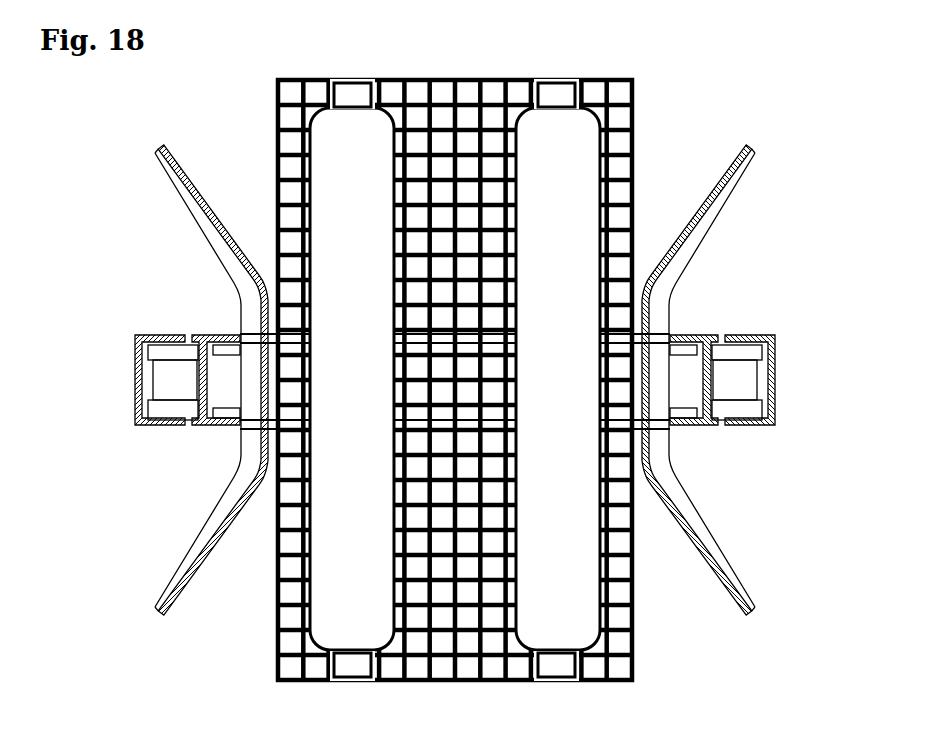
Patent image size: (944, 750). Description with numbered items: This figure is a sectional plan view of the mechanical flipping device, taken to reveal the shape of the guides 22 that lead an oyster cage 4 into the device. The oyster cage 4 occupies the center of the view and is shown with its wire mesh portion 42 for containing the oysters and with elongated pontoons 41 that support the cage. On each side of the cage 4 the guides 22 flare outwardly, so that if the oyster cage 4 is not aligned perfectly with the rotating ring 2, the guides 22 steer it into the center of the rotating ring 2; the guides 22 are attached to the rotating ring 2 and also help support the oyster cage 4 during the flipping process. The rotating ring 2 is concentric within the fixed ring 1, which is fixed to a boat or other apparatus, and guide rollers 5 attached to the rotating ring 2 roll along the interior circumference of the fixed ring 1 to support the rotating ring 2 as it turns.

The fixed ring 1 is at (178, 334).
The rotating ring 2 is at (218, 428).
The oyster cage 4 is at (456, 357).
The guide roller 5 is at (138, 425).
The guide 22 is at (262, 250).
The elongated pontoon 41 is at (522, 110).
The wire mesh portion 42 is at (636, 103).